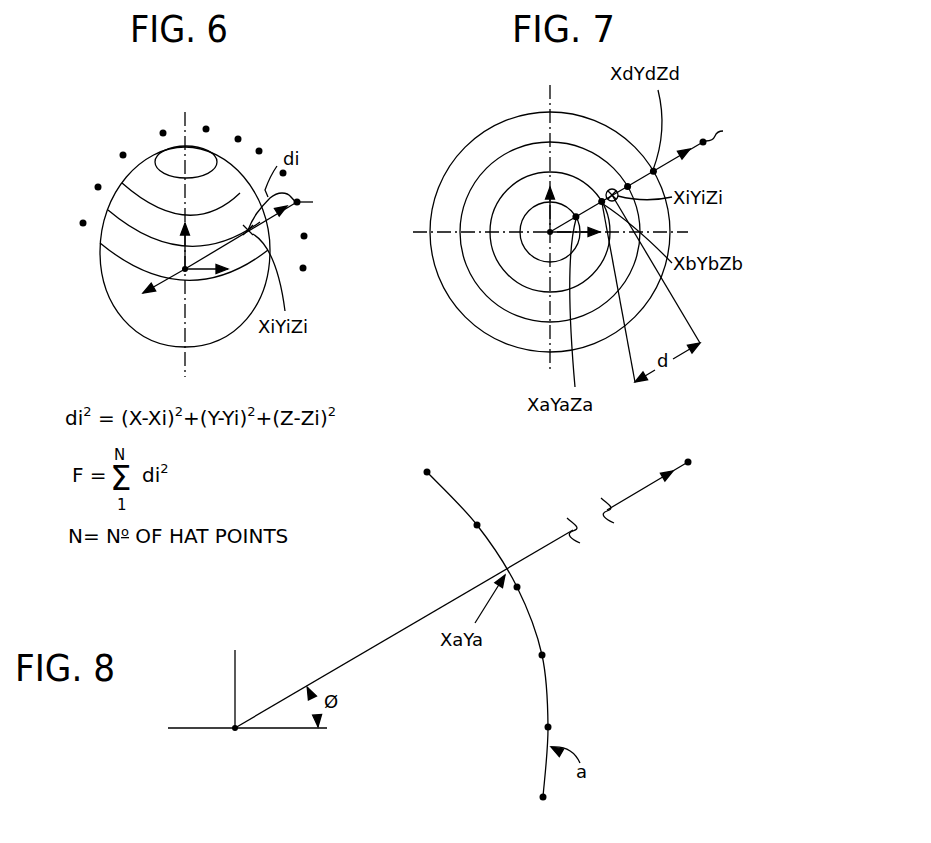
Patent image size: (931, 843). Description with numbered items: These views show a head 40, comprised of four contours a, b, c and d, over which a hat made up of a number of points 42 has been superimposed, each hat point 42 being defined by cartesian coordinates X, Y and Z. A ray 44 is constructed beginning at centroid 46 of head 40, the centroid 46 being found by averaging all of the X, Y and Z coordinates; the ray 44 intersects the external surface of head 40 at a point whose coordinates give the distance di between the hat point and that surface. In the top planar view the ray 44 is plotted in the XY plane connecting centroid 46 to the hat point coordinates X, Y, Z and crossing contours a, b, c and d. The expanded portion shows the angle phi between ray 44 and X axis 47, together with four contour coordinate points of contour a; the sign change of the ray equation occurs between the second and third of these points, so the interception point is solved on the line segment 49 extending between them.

In FIG. 6, the head 40 is at (213, 152).
In FIG. 7, the head 40 is at (465, 138).
In FIG. 6, the hat points 42 is at (163, 133).
In FIG. 6, the ray 44 is at (214, 250).
In FIG. 7, the ray 44 is at (625, 184).
In FIG. 8, the ray 44 is at (413, 623).
In FIG. 6, the centroid 46 is at (188, 276).
In FIG. 7, the centroid 46 is at (550, 234).
In FIG. 8, the X axis 47 is at (273, 731).
In FIG. 8, the line segment 49 is at (491, 549).